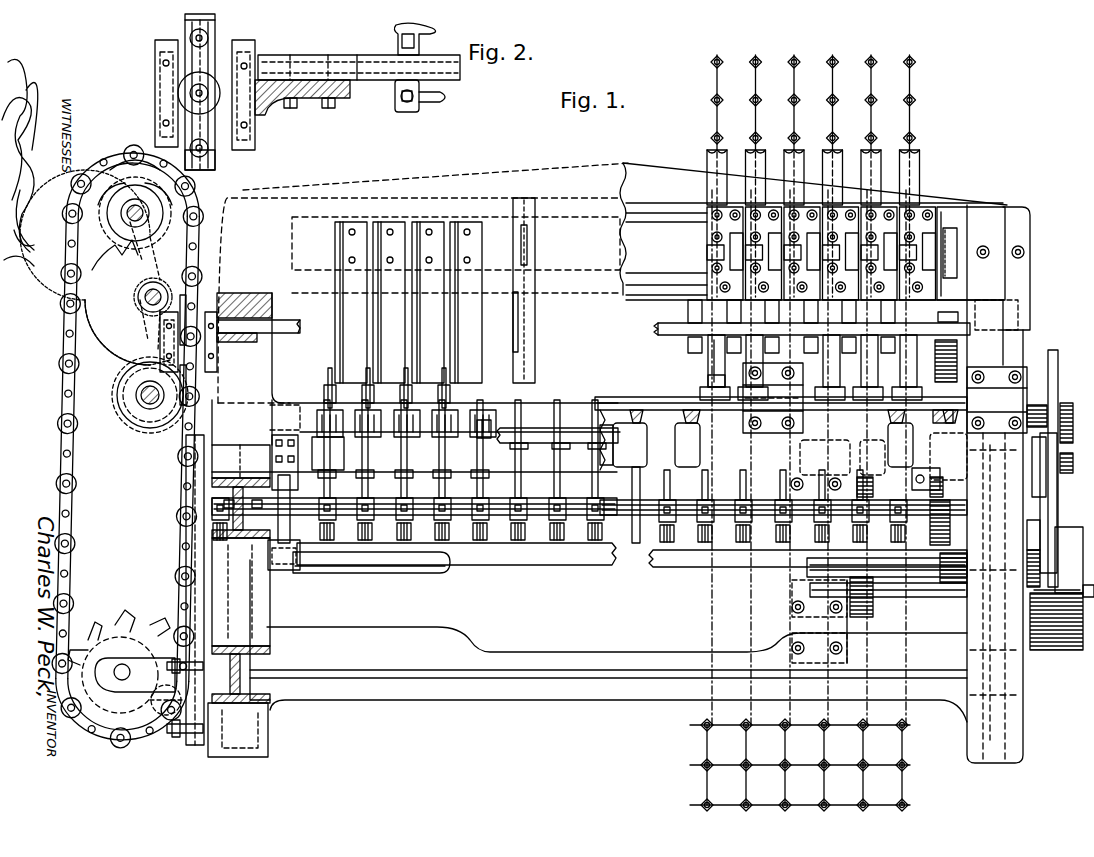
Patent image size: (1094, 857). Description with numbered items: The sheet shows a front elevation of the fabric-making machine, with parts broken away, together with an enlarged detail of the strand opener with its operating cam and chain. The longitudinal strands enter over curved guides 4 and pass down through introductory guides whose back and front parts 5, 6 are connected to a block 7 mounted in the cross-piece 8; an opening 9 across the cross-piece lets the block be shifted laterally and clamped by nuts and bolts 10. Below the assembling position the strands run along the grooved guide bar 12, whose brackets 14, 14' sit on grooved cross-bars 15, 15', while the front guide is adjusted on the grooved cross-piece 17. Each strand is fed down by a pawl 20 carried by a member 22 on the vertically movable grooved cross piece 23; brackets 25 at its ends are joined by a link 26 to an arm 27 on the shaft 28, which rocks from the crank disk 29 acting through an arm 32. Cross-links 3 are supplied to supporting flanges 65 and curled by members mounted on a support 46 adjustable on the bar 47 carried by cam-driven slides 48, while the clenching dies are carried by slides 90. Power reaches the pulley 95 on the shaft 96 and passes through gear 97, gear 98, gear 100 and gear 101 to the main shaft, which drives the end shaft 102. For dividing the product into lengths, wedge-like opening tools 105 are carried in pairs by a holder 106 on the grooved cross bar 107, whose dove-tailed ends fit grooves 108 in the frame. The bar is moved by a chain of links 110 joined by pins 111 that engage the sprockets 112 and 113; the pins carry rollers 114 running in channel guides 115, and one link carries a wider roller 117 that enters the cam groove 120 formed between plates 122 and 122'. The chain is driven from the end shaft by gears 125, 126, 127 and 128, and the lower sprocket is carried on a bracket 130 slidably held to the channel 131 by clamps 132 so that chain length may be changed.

In FIG. 1, the cross-links 3 is at (1073, 442).
In FIG. 1, the curved guides 4 is at (912, 176).
In FIG. 1, the back part of introductory guide 5 is at (536, 285).
In FIG. 1, the front part of introductory guide 6 is at (460, 225).
In FIG. 1, the block 7 is at (962, 238).
In FIG. 1, the cross-piece 8 is at (1010, 228).
In FIG. 1, the opening 9 is at (952, 256).
In FIG. 1, the nuts and bolts 10 is at (932, 213).
In FIG. 1, the grooved guide bar 12 is at (566, 486).
In FIG. 1, the bracket 14 is at (558, 456).
In FIG. 1, the bracket 14' is at (498, 544).
In FIG. 1, the grooved cross-bar 15 is at (547, 445).
In FIG. 1, the grooved cross-bar 15' is at (544, 544).
In FIG. 1, the grooved cross-piece 17 is at (576, 556).
In FIG. 1, the pawl 20 is at (322, 418).
In FIG. 1, the member 22 is at (440, 432).
In FIG. 1, the grooved cross piece 23 is at (324, 452).
In FIG. 1, the brackets 25 is at (275, 436).
In FIG. 1, the link 26 is at (286, 518).
In FIG. 1, the arm 27 is at (292, 560).
In FIG. 1, the shaft 28 is at (402, 573).
In FIG. 1, the crank disk 29 is at (1056, 364).
In FIG. 1, the arm 32 is at (1058, 510).
In FIG. 1, the support 46 is at (706, 392).
In FIG. 1, the bar 47 is at (624, 398).
In FIG. 1, the slides 48 is at (640, 426).
In FIG. 1, the supporting flanges 65 is at (326, 388).
In FIG. 1, the slides 90 is at (700, 432).
In FIG. 1, the pulley 95 is at (1062, 652).
In FIG. 1, the shaft 96 is at (922, 592).
In FIG. 1, the gear 97 is at (873, 598).
In FIG. 1, the gear 98 is at (873, 487).
In FIG. 1, the gear 100 is at (933, 478).
In FIG. 1, the gear 101 is at (945, 323).
In FIG. 1, the end shaft 102 is at (154, 412).
In FIG. 2, the opening tools 105 is at (438, 101).
In FIG. 2, the holder 106 is at (406, 113).
In FIG. 1, the holder 106 is at (688, 311).
In FIG. 2, the grooved cross bar 107 is at (372, 62).
In FIG. 1, the grooved cross bar 107 is at (272, 330).
In FIG. 1, the grooves 108 is at (1018, 330).
In FIG. 1, the chain links 110 is at (64, 383).
In FIG. 1, the pins 111 is at (650, 285).
In FIG. 1, the sprocket 112 is at (133, 185).
In FIG. 1, the sprocket 113 is at (114, 640).
In FIG. 2, the rollers 114 is at (190, 36).
In FIG. 1, the rollers 114 is at (64, 488).
In FIG. 2, the guides 115 is at (215, 161).
In FIG. 1, the guides 115 is at (198, 300).
In FIG. 2, the wider roller 117 is at (244, 104).
In FIG. 2, the cam groove 120 is at (223, 60).
In FIG. 2, the plate 122 is at (141, 93).
In FIG. 1, the plate 122 is at (130, 349).
In FIG. 2, the plate 122' is at (281, 104).
In FIG. 1, the plate 122' is at (238, 348).
In FIG. 1, the gear 125 is at (132, 420).
In FIG. 1, the gear 126 is at (108, 336).
In FIG. 1, the gear 127 is at (62, 305).
In FIG. 1, the gear 128 is at (62, 275).
In FIG. 1, the bracket 130 is at (148, 716).
In FIG. 1, the channel 131 is at (196, 546).
In FIG. 1, the clamps 132 is at (188, 736).